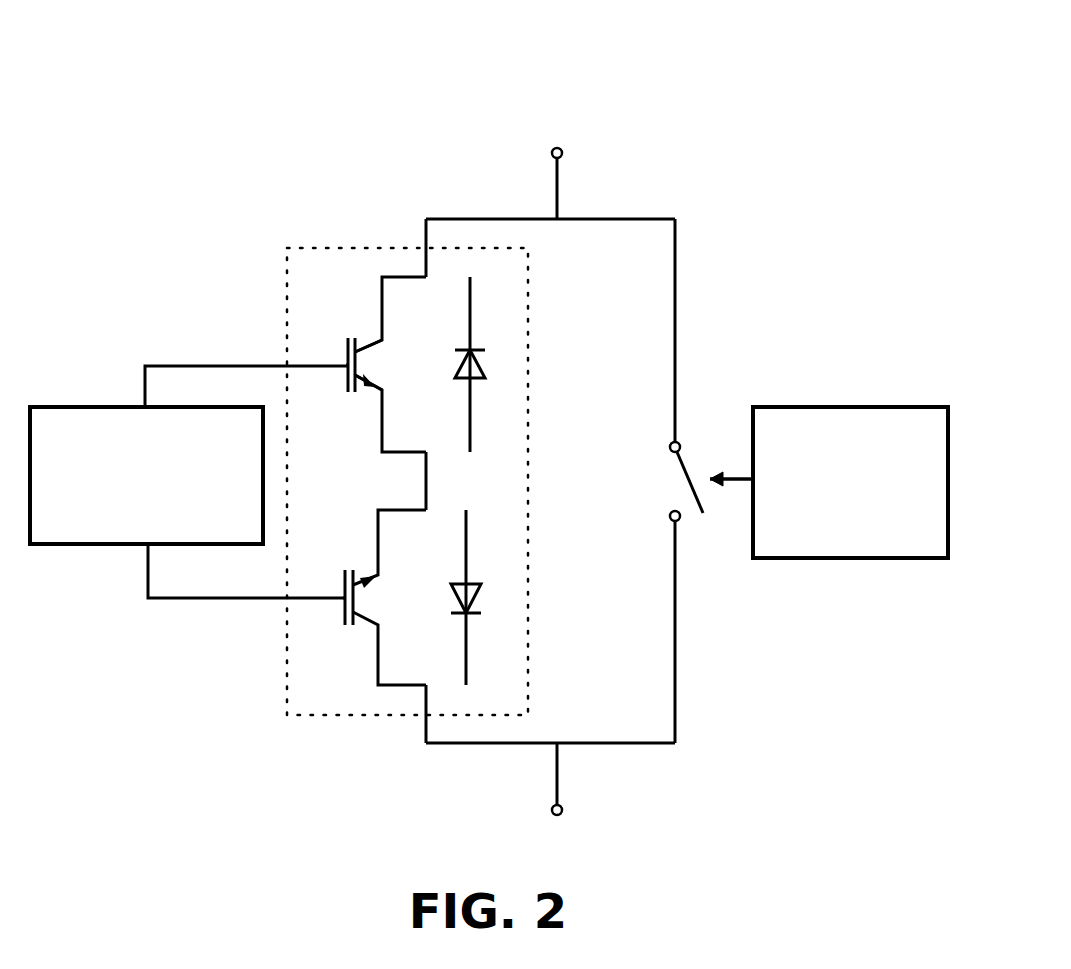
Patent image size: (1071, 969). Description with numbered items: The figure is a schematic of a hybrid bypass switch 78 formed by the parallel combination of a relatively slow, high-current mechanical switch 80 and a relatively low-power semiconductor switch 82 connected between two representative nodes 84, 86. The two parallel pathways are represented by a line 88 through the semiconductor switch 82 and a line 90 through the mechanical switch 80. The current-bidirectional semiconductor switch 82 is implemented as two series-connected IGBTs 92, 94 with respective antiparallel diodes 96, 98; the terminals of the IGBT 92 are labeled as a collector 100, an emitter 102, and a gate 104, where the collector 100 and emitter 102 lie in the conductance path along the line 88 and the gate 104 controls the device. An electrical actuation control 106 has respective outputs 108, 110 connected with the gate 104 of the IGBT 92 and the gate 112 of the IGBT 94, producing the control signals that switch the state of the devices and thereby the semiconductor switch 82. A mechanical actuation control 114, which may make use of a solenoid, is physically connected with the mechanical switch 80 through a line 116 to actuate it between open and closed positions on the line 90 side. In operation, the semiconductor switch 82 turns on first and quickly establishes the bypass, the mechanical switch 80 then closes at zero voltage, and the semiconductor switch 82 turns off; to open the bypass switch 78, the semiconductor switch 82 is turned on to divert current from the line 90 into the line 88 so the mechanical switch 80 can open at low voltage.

The hybrid switch 78 is at (712, 135).
The mechanical switch 80 is at (694, 458).
The semiconductor switch 82 is at (531, 273).
The node 84 is at (558, 146).
The node 86 is at (563, 812).
The line 88 is at (485, 216).
The line 90 is at (679, 252).
The IGBT 92 is at (350, 330).
The IGBT 94 is at (348, 644).
The antiparallel diode 96 is at (493, 366).
The antiparallel diode 98 is at (483, 598).
The collector 100 is at (372, 352).
The emitter 102 is at (378, 397).
The gate 104 is at (325, 360).
The electrical actuation control 106 is at (86, 548).
The output 108 is at (143, 385).
The output 110 is at (145, 583).
The gate 112 is at (324, 594).
The mechanical actuation control 114 is at (822, 405).
The line 116 is at (737, 483).